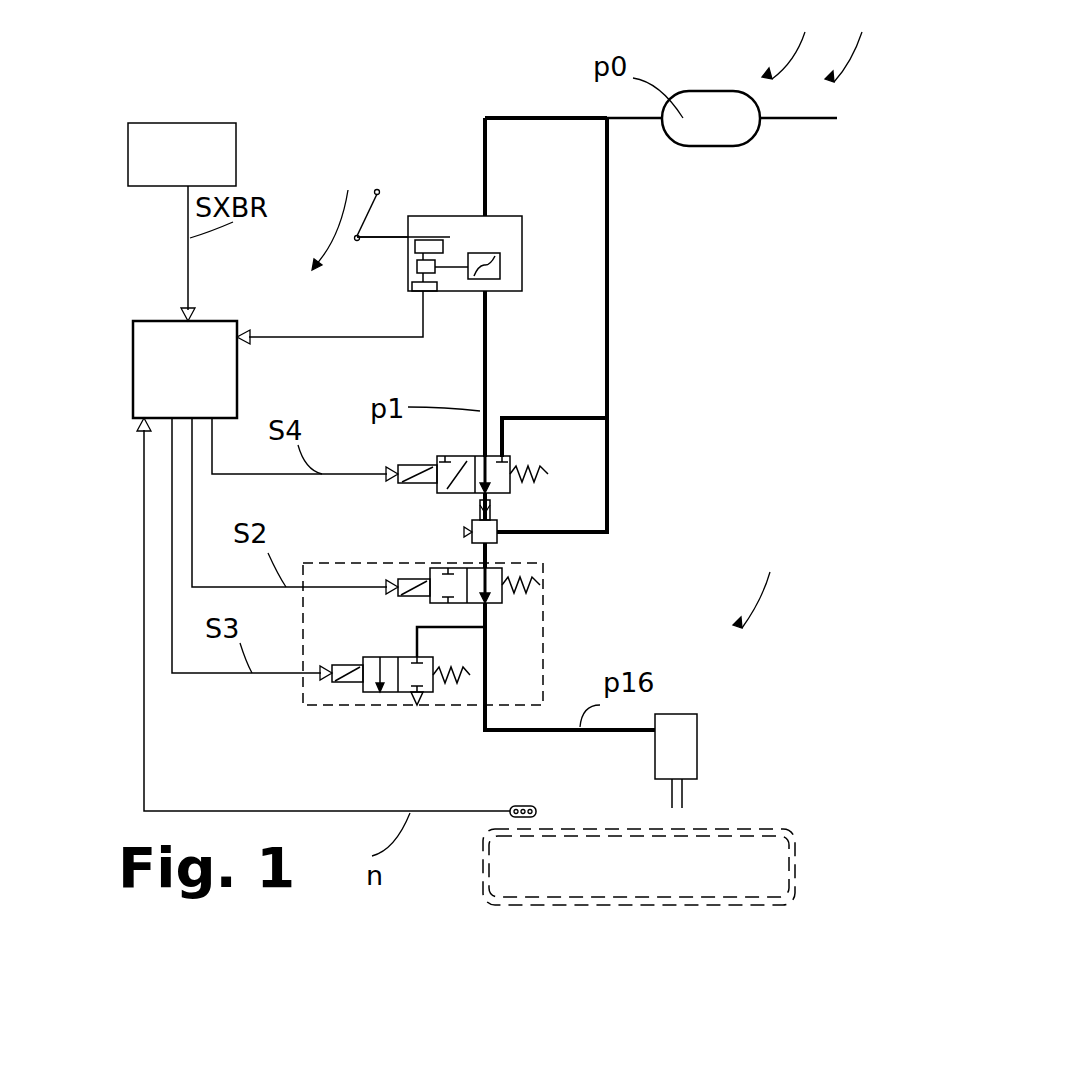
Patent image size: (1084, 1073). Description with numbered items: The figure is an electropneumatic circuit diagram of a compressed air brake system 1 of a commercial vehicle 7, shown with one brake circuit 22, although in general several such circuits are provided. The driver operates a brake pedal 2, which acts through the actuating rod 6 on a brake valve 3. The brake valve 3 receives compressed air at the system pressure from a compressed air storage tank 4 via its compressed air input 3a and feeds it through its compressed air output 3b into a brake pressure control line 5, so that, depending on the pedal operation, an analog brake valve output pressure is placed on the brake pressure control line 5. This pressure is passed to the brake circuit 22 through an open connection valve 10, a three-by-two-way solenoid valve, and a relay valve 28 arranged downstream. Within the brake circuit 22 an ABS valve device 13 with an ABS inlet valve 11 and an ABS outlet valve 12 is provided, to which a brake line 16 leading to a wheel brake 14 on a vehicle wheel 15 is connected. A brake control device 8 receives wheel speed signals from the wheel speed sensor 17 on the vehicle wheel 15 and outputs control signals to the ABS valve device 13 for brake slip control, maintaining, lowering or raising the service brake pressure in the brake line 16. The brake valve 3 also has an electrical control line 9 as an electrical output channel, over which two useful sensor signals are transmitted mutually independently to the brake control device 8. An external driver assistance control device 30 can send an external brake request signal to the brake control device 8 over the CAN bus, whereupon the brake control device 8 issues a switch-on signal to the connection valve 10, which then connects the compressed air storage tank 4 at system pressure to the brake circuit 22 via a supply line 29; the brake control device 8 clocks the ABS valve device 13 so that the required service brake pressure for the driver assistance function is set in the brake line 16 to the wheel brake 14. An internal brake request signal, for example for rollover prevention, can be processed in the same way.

The compressed air brake system 1 is at (793, 41).
The brake pedal 2 is at (346, 215).
The brake valve 3 is at (522, 216).
The compressed air input 3a is at (485, 212).
The compressed air output 3b is at (487, 293).
The compressed air storage tank 4 is at (720, 100).
The brake pressure control line 5 is at (480, 365).
The actuating rod of the brake valve 6 is at (386, 238).
The commercial vehicle 7 is at (852, 42).
The brake control device 8 is at (142, 302).
The electrical control line 9 is at (318, 340).
The connection valve 10 is at (508, 458).
The ABS inlet valve 11 is at (508, 603).
The ABS outlet valve 12 is at (368, 657).
The ABS valve device 13 is at (302, 700).
The wheel brake 14 is at (687, 738).
The vehicle wheel 15 is at (735, 840).
The brake line 16 is at (538, 727).
The wheel speed sensor 17 is at (510, 808).
The brake circuit 22 is at (768, 581).
The relay valve 28 is at (472, 517).
The supply line 29 is at (542, 418).
The external driver assistance control device 30 is at (160, 123).